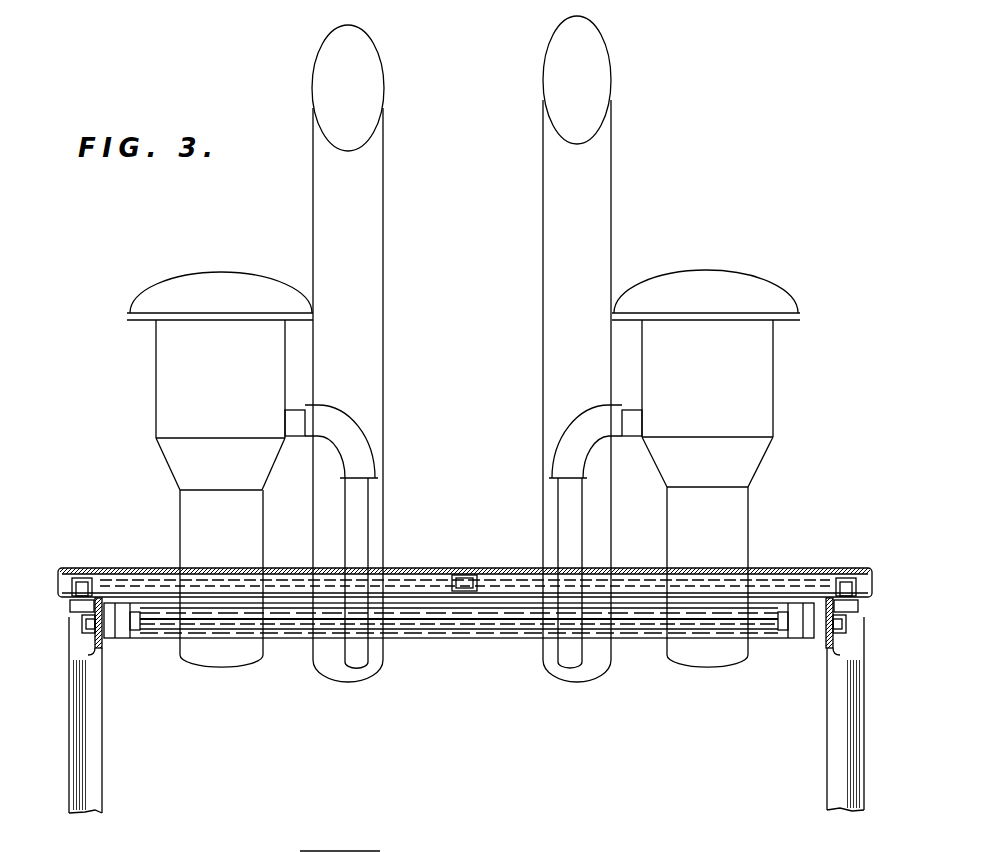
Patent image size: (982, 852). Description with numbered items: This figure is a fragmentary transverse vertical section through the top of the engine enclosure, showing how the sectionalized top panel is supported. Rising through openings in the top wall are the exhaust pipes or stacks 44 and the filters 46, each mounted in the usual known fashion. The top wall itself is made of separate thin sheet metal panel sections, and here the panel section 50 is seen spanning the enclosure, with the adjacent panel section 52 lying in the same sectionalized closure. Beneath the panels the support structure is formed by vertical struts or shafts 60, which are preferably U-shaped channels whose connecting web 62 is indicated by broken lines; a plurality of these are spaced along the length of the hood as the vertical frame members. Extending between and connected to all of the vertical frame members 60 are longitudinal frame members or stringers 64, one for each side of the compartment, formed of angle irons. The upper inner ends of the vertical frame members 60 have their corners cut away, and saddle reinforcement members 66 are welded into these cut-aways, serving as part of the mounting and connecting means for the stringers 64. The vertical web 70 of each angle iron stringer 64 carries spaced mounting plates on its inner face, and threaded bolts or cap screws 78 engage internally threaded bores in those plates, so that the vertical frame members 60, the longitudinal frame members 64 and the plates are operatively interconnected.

The exhaust pipes or stacks 44 is at (385, 112).
The filters 46 is at (156, 385).
The panel section 50 is at (764, 568).
The panel section 52 is at (340, 845).
The vertical struts or shafts 60 is at (103, 702).
The connecting web 62 is at (100, 793).
The longitudinal frame members or stringers 64 is at (105, 638).
The saddle reinforcement members 66 is at (95, 652).
The vertical web 70 is at (88, 634).
The threaded bolts or cap screws 78 is at (85, 625).